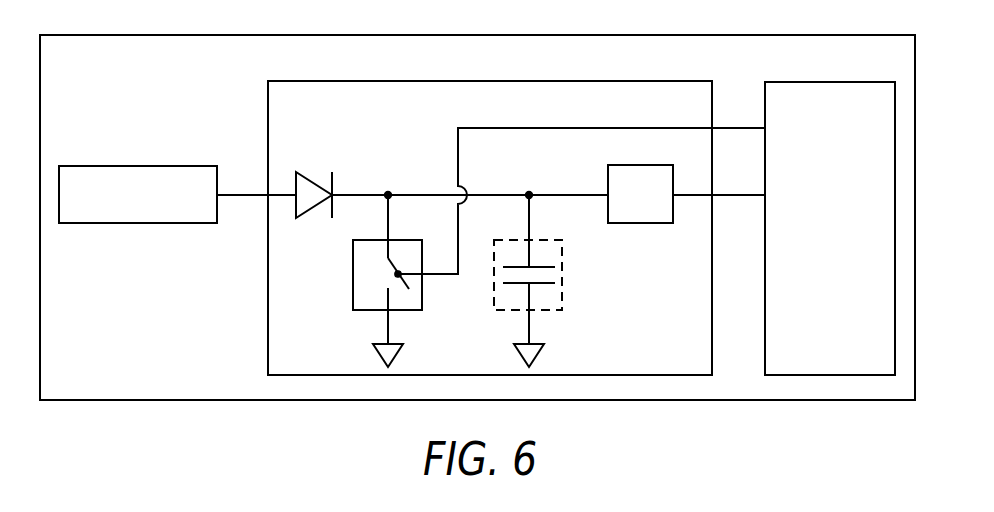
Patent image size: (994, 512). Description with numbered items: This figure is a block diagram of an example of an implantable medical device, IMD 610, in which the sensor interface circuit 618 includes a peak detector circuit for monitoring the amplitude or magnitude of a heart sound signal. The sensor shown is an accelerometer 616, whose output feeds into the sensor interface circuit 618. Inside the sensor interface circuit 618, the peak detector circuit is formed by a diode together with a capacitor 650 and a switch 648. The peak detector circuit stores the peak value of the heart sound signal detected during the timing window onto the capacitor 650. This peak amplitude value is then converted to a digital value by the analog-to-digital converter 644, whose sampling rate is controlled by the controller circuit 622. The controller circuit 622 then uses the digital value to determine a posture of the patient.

The IMD 610 is at (660, 35).
The accelerometer 616 is at (137, 166).
The sensor interface circuit 618 is at (490, 81).
The controller circuit 622 is at (830, 82).
The analog-to-digital converter 644 is at (642, 165).
The switch 648 is at (353, 277).
The capacitor 650 is at (562, 276).